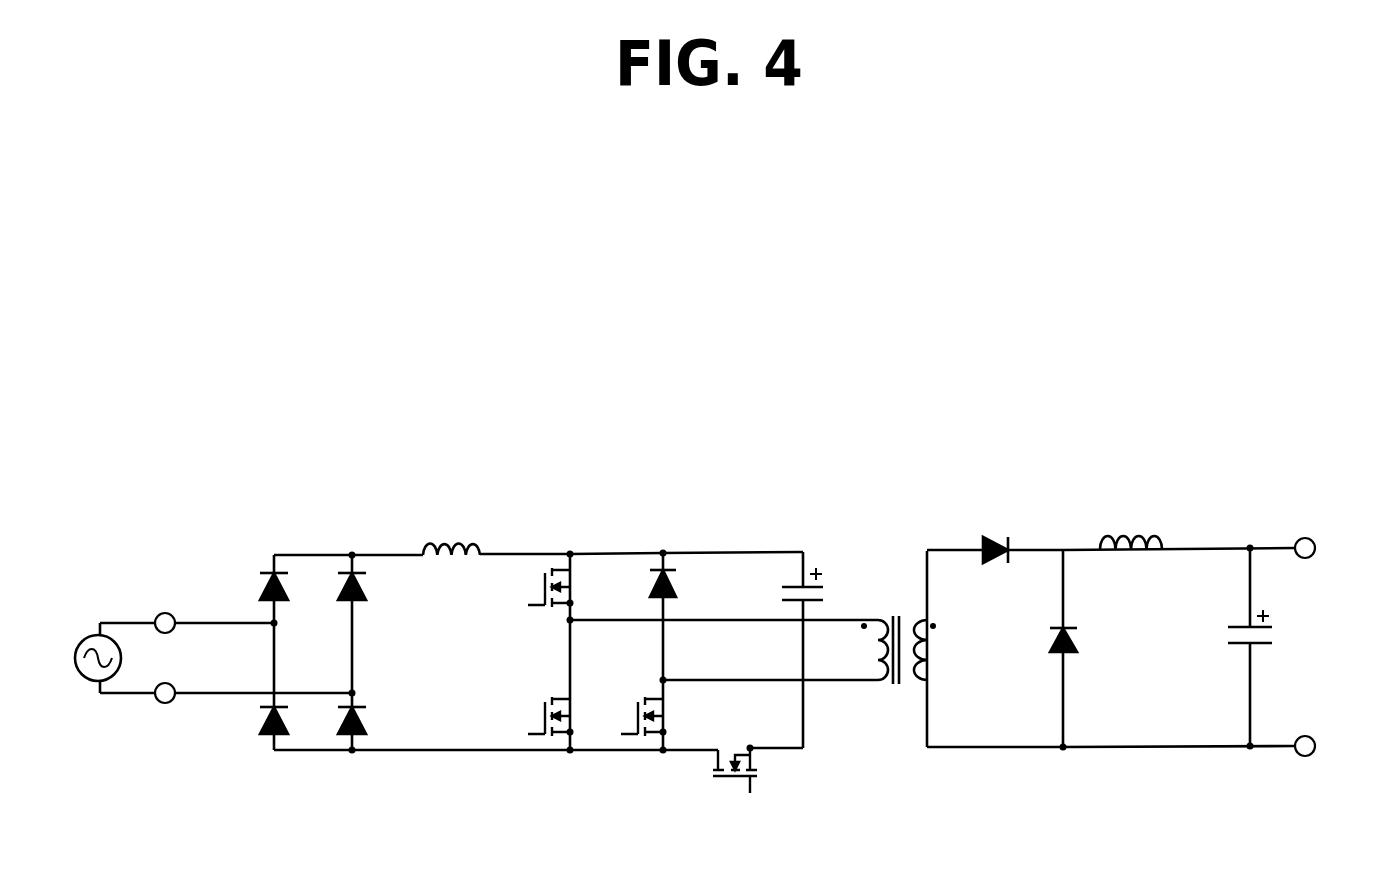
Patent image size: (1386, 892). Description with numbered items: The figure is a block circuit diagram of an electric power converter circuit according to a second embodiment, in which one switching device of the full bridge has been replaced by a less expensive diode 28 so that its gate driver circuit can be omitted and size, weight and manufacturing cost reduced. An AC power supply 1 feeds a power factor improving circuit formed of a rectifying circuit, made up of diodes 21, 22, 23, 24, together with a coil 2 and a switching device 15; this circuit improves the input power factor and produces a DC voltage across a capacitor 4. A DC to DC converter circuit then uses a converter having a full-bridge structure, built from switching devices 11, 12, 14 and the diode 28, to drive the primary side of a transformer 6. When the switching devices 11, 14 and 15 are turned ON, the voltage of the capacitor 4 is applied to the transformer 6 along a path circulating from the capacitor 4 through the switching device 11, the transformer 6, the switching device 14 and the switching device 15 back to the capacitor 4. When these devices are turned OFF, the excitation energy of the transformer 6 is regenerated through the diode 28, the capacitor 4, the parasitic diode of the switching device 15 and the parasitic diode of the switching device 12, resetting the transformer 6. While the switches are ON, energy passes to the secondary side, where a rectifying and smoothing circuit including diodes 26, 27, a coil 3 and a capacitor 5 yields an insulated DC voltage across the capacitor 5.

The AC power supply 1 is at (64, 651).
The coil 2 is at (450, 528).
The coil 3 is at (1128, 522).
The capacitor 4 is at (765, 592).
The capacitor 5 is at (1280, 637).
The transformer 6 is at (875, 593).
The switching device 11 is at (537, 585).
The switching device 12 is at (523, 713).
The switching device 14 is at (620, 713).
The switching device 15 is at (767, 773).
The diode 21 is at (252, 585).
The diode 22 is at (258, 715).
The diode 23 is at (335, 585).
The diode 24 is at (335, 715).
The diode 26 is at (998, 537).
The diode 27 is at (1083, 648).
The diode 28 is at (640, 582).